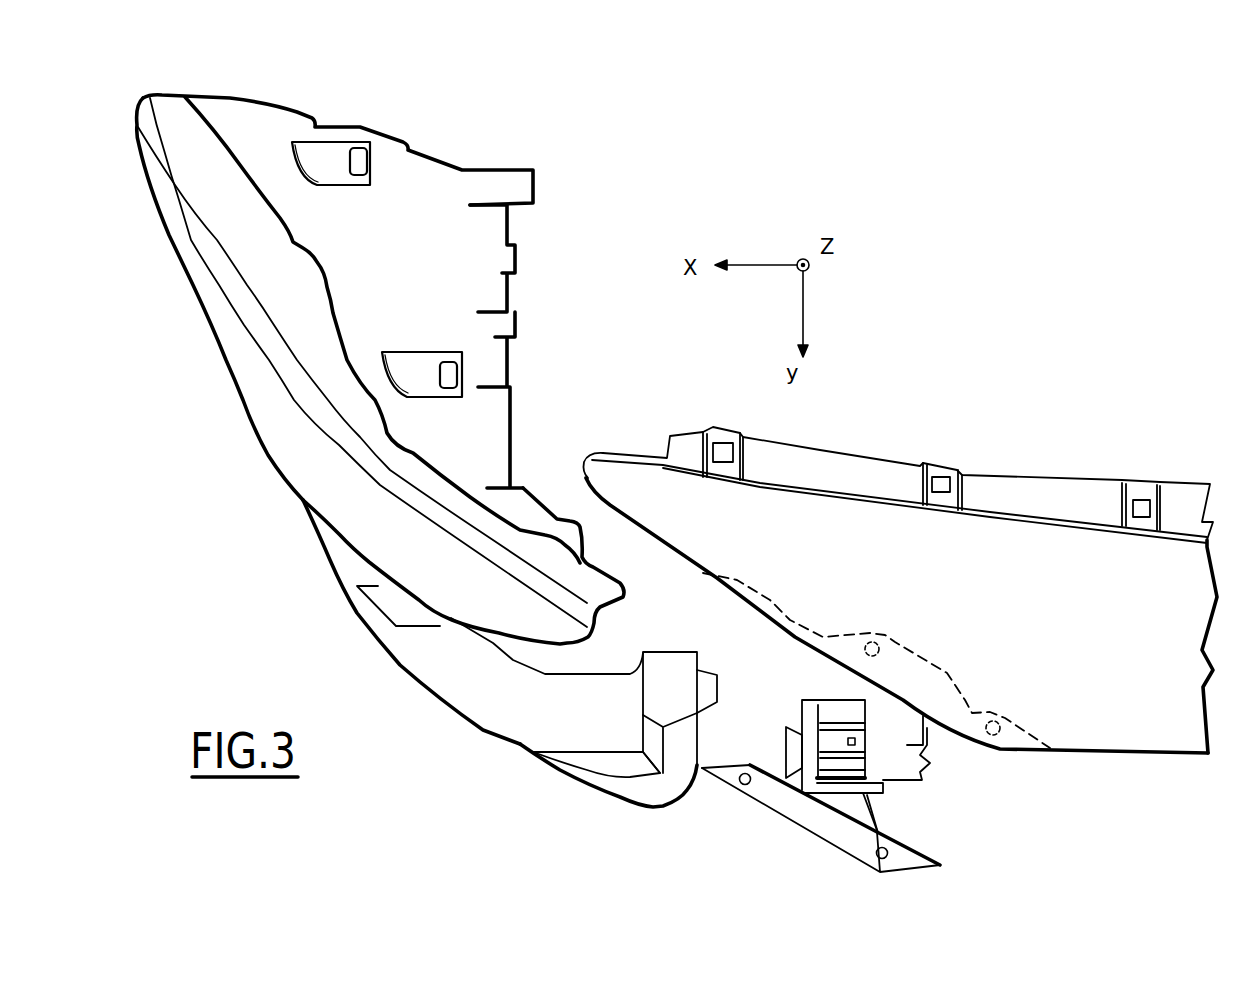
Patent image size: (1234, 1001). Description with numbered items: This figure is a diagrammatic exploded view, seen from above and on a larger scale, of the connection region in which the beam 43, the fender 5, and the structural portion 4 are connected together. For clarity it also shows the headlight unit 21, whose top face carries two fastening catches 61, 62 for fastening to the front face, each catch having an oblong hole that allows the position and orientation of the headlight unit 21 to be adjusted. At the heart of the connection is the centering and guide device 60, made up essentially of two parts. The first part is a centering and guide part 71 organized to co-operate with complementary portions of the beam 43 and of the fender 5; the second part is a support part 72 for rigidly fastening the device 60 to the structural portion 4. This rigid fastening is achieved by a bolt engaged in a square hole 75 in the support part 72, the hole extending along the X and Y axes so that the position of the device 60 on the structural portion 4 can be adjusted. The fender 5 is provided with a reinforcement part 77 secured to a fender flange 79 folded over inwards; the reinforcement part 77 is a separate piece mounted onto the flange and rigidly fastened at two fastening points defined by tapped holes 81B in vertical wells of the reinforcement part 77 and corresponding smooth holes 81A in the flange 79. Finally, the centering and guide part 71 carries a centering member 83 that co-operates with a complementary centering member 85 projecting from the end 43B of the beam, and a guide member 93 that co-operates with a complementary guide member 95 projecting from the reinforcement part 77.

The structural portion 4 is at (927, 745).
The fender 5 is at (1020, 540).
The headlight unit 21 is at (422, 180).
The beam 43 is at (360, 617).
The end of the beam 43B is at (608, 763).
The centering and guide device 60 is at (777, 714).
The fastening catch 61 is at (340, 173).
The fastening catch 62 is at (425, 365).
The centering and guide part 71 is at (825, 788).
The support part 72 is at (833, 717).
The square hole 75 is at (857, 742).
The reinforcement part 77 is at (835, 832).
The fender flange 79 is at (792, 620).
The smooth holes 81A is at (883, 637).
The tapped holes 81B is at (742, 788).
The centering member 83 is at (785, 740).
The complementary centering member 85 is at (710, 673).
The guide member 93 is at (880, 795).
The complementary guide member 95 is at (853, 810).